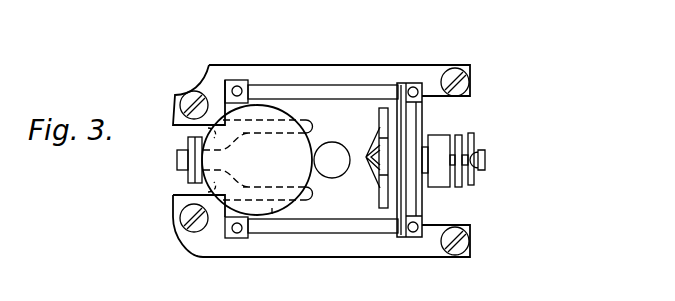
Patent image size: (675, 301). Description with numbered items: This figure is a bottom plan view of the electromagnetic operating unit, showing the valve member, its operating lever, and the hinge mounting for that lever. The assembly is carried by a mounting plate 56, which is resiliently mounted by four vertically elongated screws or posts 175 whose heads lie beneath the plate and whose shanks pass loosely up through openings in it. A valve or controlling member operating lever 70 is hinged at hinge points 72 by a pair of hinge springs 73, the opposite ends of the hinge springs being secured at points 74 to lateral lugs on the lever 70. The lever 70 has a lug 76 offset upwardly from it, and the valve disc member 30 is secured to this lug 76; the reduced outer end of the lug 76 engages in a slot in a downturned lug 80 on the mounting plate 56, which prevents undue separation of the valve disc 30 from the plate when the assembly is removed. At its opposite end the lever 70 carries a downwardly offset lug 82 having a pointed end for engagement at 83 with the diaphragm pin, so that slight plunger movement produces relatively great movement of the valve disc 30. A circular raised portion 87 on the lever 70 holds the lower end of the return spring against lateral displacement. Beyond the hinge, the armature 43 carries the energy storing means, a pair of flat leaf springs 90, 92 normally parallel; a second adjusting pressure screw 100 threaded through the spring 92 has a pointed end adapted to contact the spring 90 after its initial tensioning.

The mounting plate 56 is at (210, 70).
The screws or posts 175 is at (176, 96).
The securing points of the hinge springs 74 is at (238, 86).
The hinge springs 73 is at (289, 92).
The operating lever 70 is at (340, 112).
The lug 76 is at (268, 134).
The circular raised portion 87 is at (325, 142).
The downturned lug 80 is at (188, 176).
The downwardly offset lug 82 is at (368, 143).
The pointed engagement 83 is at (368, 168).
The hinge points 72 is at (414, 90).
The armature 43 is at (440, 140).
The leaf spring 90 is at (458, 137).
The leaf spring 92 is at (474, 140).
The second adjusting pressure screw 100 is at (485, 168).
The valve disc member 30 is at (272, 208).